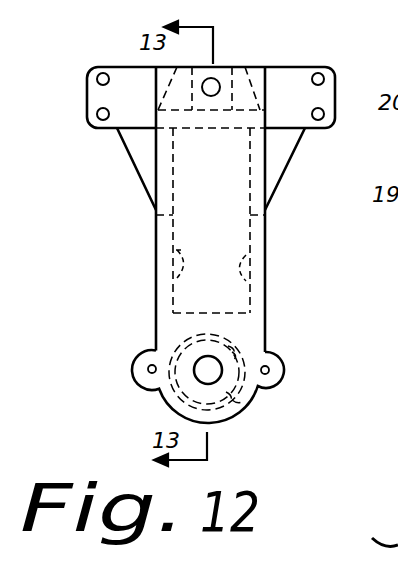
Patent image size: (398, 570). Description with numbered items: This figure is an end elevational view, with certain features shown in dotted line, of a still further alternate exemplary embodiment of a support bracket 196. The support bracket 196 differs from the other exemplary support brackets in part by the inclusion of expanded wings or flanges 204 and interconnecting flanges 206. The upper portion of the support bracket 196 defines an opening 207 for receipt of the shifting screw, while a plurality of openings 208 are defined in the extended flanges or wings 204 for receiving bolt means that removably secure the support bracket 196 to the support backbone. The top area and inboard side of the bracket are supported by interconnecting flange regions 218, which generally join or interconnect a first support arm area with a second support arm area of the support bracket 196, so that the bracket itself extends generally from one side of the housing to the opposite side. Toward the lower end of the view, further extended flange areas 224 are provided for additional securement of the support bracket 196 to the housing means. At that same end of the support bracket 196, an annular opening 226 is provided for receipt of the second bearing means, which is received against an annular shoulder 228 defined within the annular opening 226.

The support bracket 196 is at (236, 239).
The expanded wings or flanges 204 is at (91, 130).
The interconnecting flanges 206 is at (138, 178).
The opening 207 is at (214, 79).
The openings 208 is at (97, 76).
The interconnecting flange regions 218 is at (165, 250).
The extended flange areas 224 is at (133, 360).
The annular opening 226 is at (268, 335).
The annular shoulder 228 is at (246, 400).